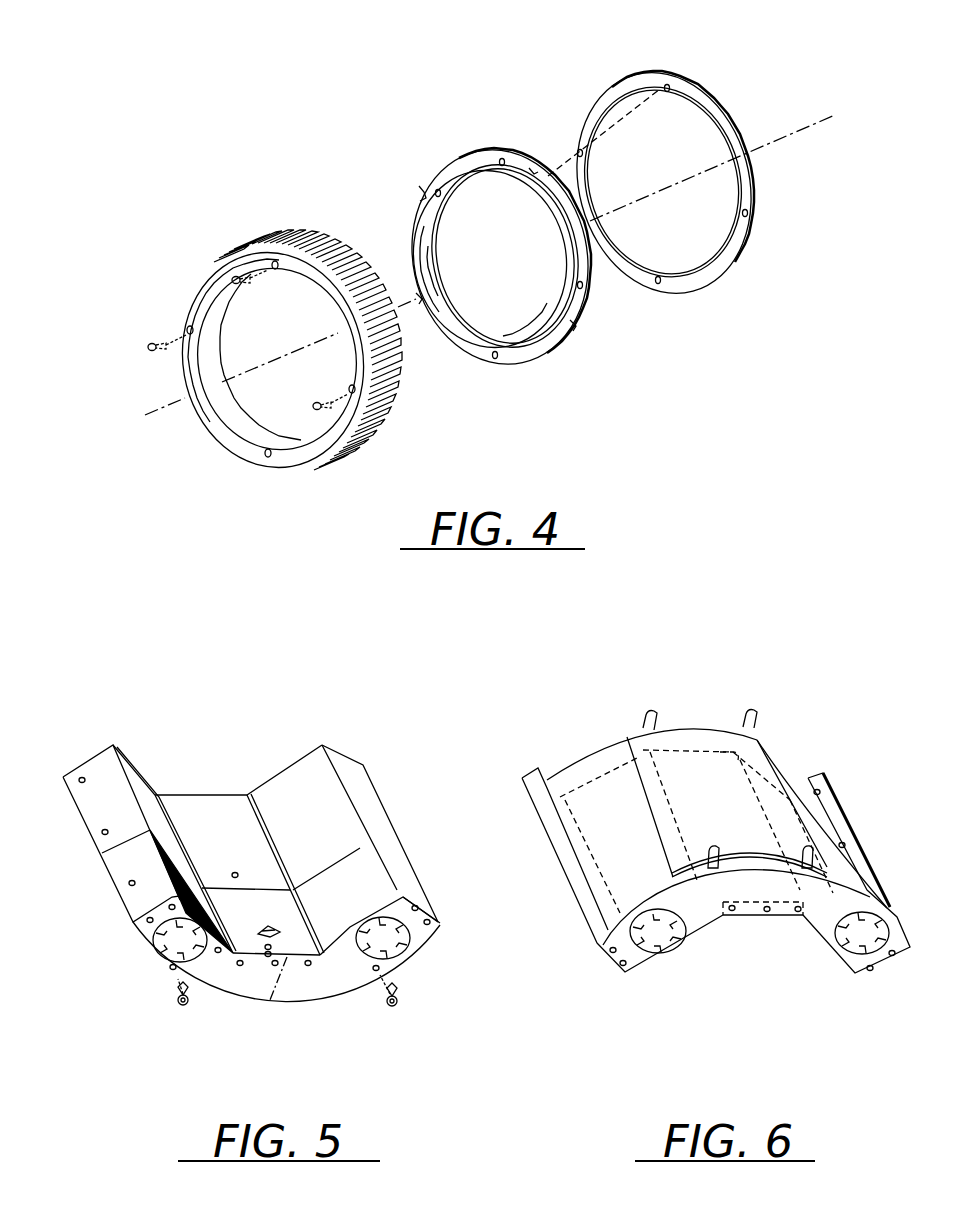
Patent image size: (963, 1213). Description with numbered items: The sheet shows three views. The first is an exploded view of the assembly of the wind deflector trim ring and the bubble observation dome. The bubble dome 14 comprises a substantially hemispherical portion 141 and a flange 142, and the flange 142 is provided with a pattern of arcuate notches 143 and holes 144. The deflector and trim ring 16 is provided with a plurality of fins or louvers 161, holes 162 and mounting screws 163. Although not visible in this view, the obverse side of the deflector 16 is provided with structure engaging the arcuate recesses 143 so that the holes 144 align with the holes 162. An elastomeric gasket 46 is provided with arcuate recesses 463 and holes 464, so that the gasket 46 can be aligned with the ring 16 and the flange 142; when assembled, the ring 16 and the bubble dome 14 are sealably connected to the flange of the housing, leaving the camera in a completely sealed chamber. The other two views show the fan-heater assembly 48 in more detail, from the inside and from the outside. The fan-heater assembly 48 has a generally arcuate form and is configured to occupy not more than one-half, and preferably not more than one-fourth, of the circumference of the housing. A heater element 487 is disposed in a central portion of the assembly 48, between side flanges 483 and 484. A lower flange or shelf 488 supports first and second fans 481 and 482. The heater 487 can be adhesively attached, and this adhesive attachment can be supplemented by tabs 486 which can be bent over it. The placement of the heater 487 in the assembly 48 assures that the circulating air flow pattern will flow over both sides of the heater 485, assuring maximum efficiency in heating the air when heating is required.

In FIG. 4, the bubble dome 14 is at (470, 138).
In FIG. 4, the substantially hemispherical portion 141 is at (437, 322).
In FIG. 4, the flange 142 is at (493, 150).
In FIG. 4, the arcuate notches 143 is at (422, 187).
In FIG. 4, the holes 144 is at (497, 358).
In FIG. 4, the deflector and trim ring 16 is at (289, 208).
In FIG. 4, the fins or louvers 161 is at (323, 237).
In FIG. 4, the holes 162 is at (263, 227).
In FIG. 4, the mounting screws 163 is at (153, 344).
In FIG. 4, the elastomeric gasket 46 is at (635, 65).
In FIG. 4, the arcuate recesses 463 is at (700, 100).
In FIG. 4, the holes 464 is at (667, 88).
In FIG. 5, the fan-heater assembly 48 is at (389, 800).
In FIG. 6, the fan-heater assembly 48 is at (563, 900).
In FIG. 5, the first fan 481 is at (390, 950).
In FIG. 5, the second fan 482 is at (153, 943).
In FIG. 5, the side flange 483 is at (407, 853).
In FIG. 6, the side flange 483 is at (585, 940).
In FIG. 5, the side flange 484 is at (122, 863).
In FIG. 6, the side flange 484 is at (847, 817).
In FIG. 6, the heater 485 is at (733, 778).
In FIG. 6, the tabs 486 is at (645, 716).
In FIG. 6, the heater element 487 is at (700, 793).
In FIG. 5, the lower flange or shelf 488 is at (243, 990).
In FIG. 6, the lower flange or shelf 488 is at (745, 893).